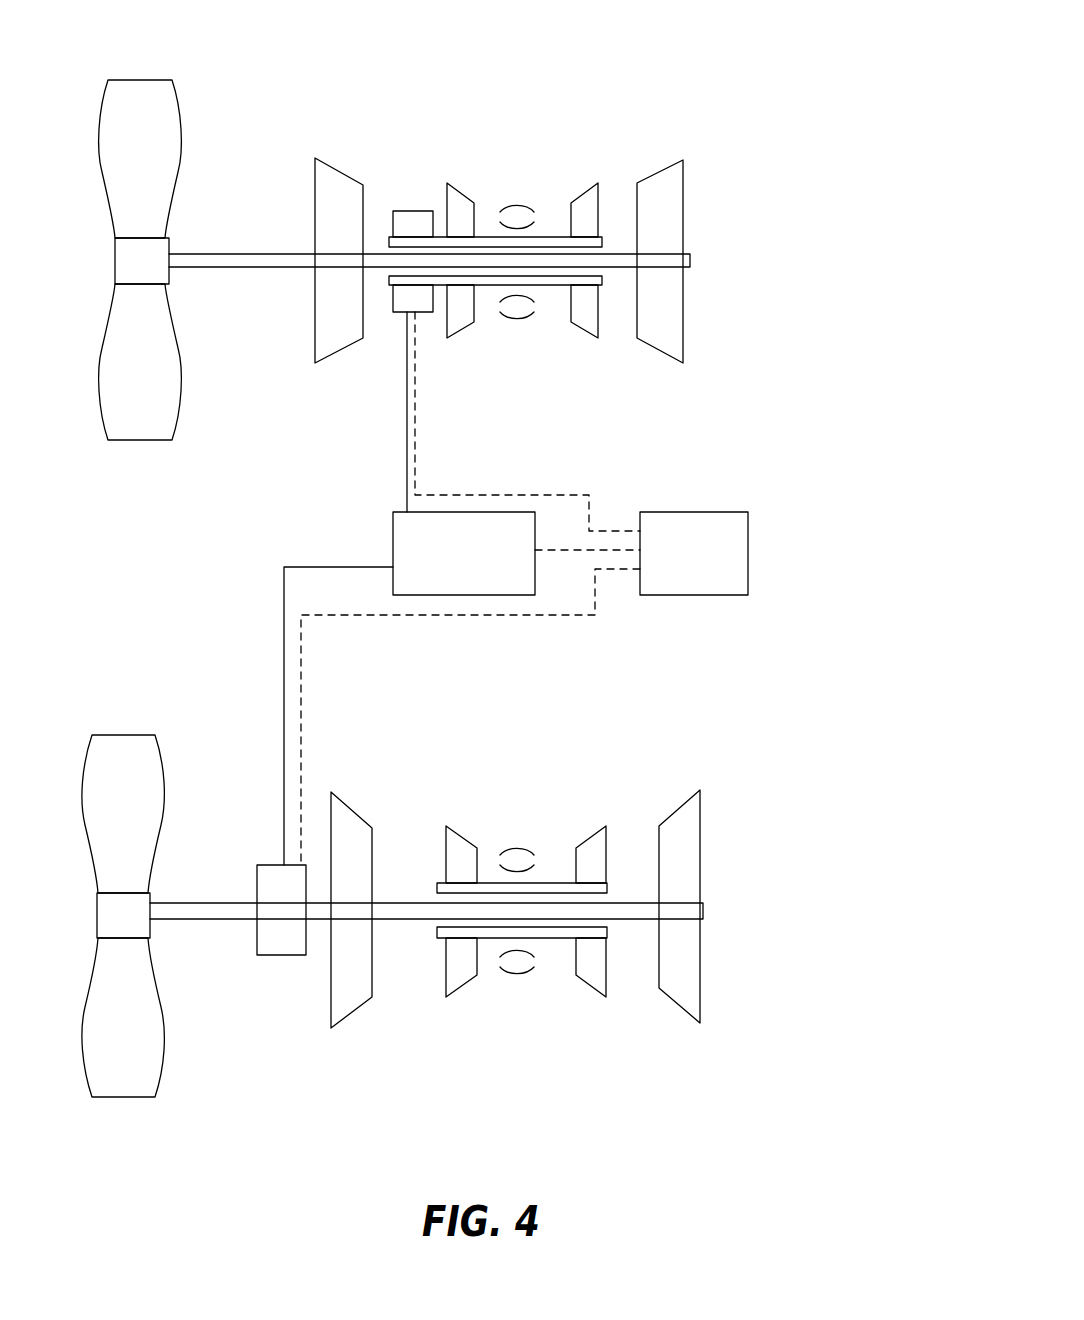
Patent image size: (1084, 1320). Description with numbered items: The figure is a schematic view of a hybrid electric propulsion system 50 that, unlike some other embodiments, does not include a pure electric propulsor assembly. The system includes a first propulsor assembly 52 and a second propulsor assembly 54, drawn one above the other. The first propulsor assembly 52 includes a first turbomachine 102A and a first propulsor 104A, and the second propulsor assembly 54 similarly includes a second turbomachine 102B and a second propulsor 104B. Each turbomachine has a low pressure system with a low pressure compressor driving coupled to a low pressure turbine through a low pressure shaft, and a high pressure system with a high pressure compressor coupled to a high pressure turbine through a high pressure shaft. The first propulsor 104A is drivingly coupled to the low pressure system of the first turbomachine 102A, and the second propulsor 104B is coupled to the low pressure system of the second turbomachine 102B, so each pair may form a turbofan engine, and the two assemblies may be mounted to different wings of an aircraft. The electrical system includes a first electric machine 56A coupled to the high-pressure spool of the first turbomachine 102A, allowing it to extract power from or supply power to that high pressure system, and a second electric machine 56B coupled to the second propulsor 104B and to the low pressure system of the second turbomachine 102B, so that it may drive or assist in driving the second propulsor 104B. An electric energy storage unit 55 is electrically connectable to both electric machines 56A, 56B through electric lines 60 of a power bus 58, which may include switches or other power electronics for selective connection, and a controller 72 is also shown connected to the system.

The hybrid electric propulsion system 50 is at (886, 73).
The first propulsor assembly 52 is at (795, 134).
The second propulsor assembly 54 is at (832, 778).
The electric energy storage unit 55 is at (464, 553).
The first electric machine 56A is at (406, 211).
The second electric machine 56B is at (257, 863).
The power bus 58 is at (288, 547).
The electric lines 60 is at (407, 395).
The controller 72 is at (694, 553).
The first turbomachine 102A is at (566, 93).
The second turbomachine 102B is at (583, 1086).
The first propulsor 104A is at (226, 137).
The second propulsor 104B is at (205, 1050).